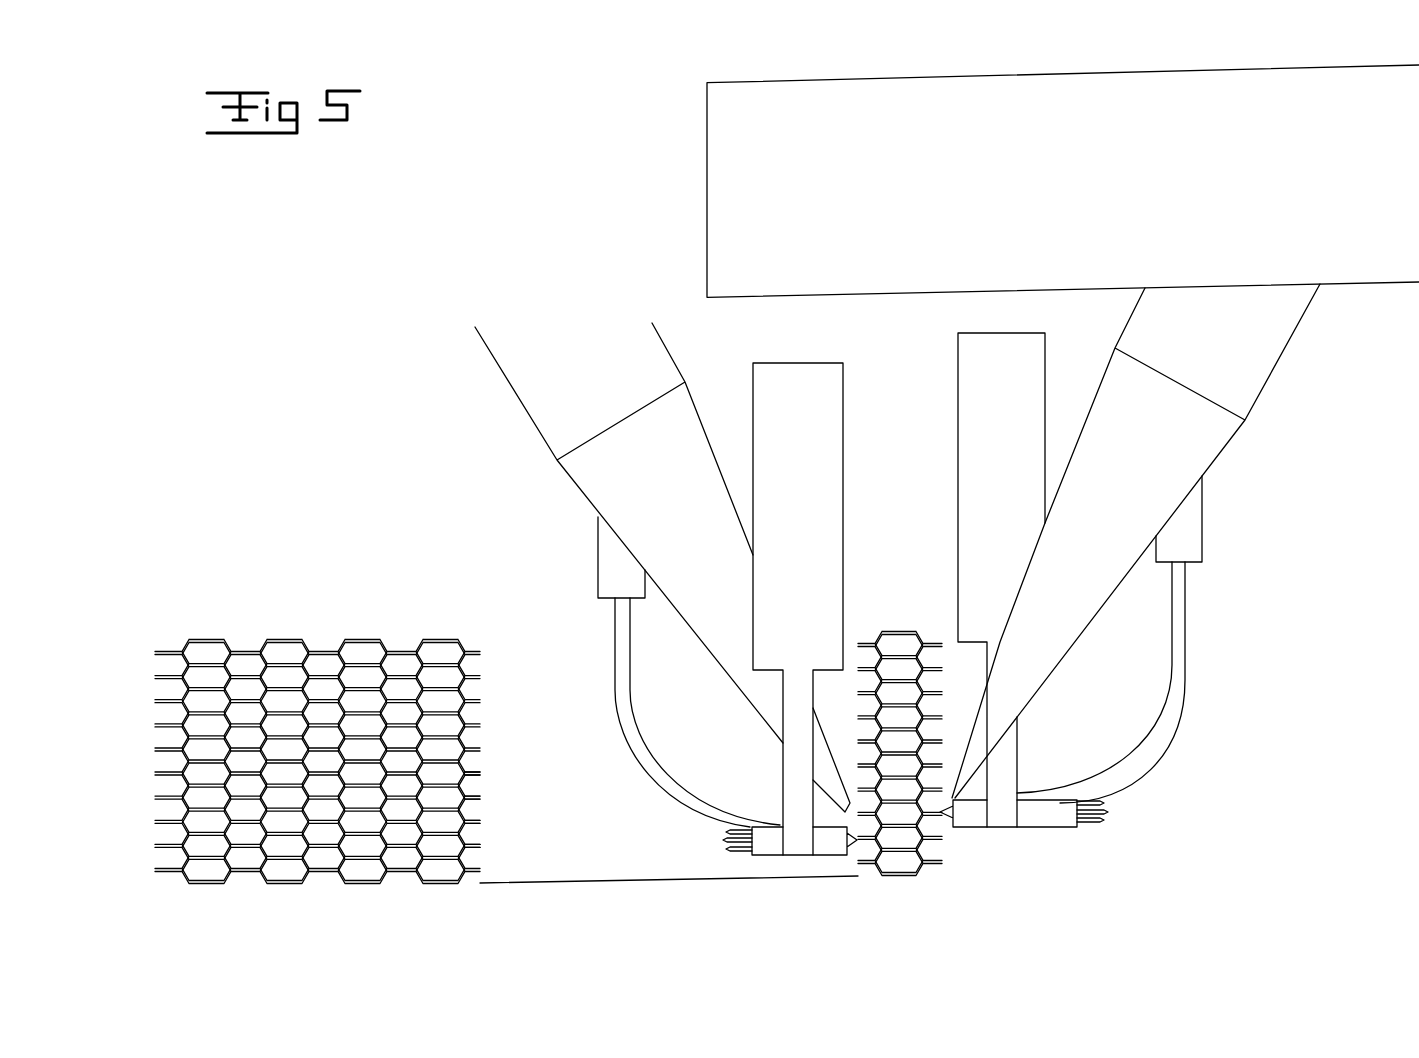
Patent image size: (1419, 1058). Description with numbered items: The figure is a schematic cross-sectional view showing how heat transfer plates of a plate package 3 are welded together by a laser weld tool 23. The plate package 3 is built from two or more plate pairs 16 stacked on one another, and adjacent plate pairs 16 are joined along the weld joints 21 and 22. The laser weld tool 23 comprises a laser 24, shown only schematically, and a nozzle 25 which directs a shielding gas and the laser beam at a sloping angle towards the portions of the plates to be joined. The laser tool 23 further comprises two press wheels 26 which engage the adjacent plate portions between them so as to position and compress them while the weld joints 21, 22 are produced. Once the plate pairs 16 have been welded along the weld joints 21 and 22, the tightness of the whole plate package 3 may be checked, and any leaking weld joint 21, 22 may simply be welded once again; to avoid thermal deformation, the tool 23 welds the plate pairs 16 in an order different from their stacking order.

The plate package 3 is at (328, 614).
The plate pairs 16 is at (468, 787).
The weld joint 21 is at (945, 820).
The weld joint 22 is at (860, 848).
The laser weld tool 23 is at (1325, 430).
The laser 24 is at (723, 206).
The nozzle 25 is at (763, 695).
The press wheels 26 is at (723, 836).